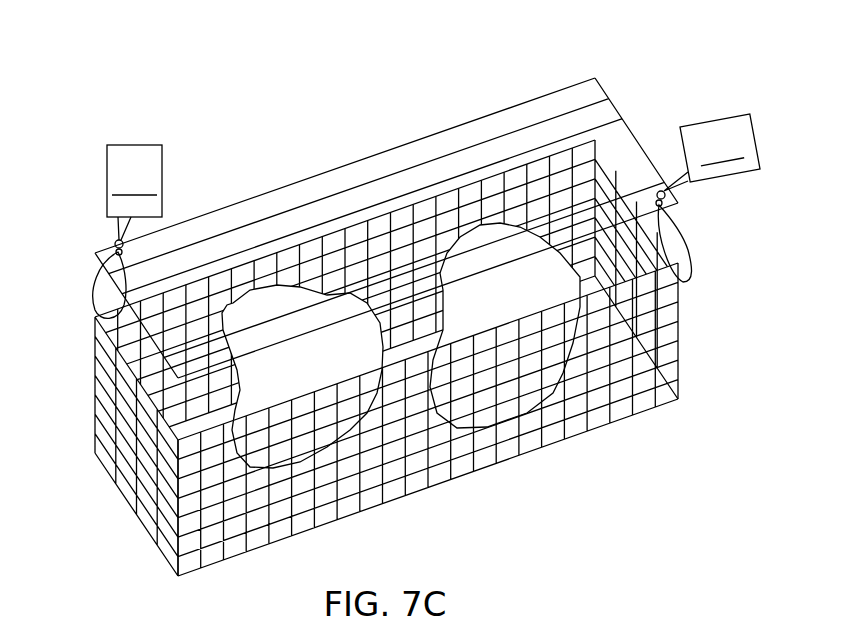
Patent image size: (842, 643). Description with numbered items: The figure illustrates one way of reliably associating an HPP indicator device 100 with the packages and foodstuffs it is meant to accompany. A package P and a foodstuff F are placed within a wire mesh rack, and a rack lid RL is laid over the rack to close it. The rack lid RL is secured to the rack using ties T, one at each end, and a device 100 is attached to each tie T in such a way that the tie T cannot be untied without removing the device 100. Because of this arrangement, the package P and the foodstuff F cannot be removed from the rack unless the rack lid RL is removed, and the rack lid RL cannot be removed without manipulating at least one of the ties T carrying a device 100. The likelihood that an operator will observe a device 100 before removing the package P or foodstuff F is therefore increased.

The rack lid RL is at (615, 90).
The device 100 is at (433, 184).
The tie T is at (92, 300).
The package P is at (312, 346).
The foodstuff F is at (512, 269).